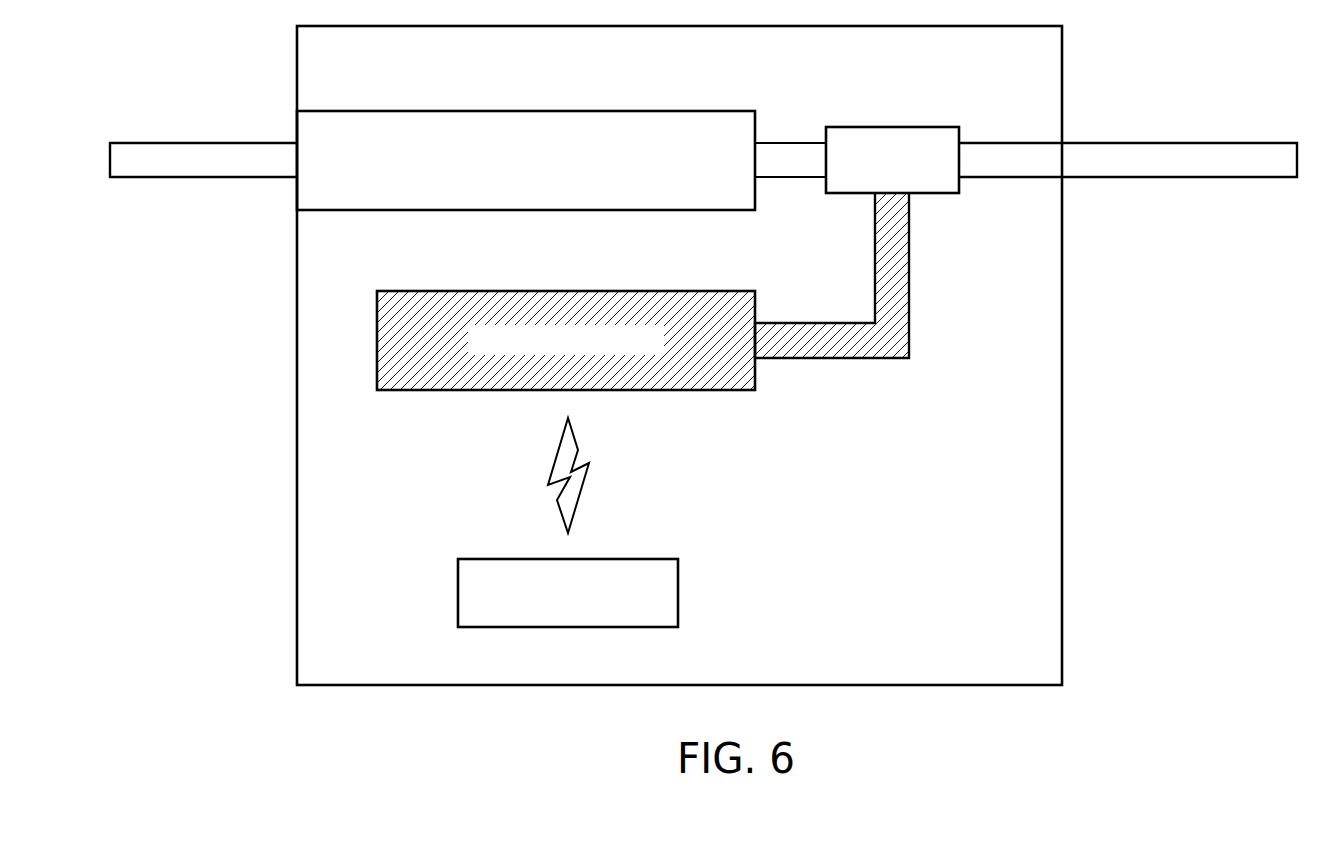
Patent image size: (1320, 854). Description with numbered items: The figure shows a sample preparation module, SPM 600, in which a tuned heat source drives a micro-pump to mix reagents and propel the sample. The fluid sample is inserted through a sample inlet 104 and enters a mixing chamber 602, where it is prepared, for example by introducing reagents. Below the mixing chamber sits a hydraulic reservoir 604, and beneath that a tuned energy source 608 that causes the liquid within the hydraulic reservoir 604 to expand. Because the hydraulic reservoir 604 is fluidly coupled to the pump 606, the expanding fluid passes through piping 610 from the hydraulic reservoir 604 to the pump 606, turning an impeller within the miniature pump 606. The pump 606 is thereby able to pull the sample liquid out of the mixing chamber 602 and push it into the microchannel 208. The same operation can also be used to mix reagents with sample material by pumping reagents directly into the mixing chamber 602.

The sample preparation module 600 is at (380, 628).
The sample inlet 104 is at (207, 143).
The mixing chamber 602 is at (562, 111).
The hydraulic reservoir 604 is at (561, 291).
The pump 606 is at (891, 127).
The tuned energy source 608 is at (678, 594).
The piping 610 is at (857, 335).
The microchannel 208 is at (1193, 143).